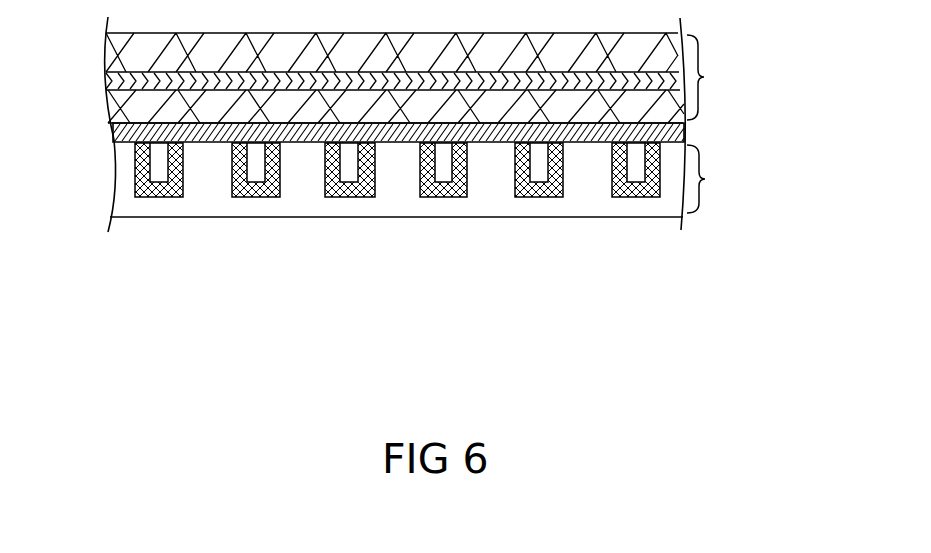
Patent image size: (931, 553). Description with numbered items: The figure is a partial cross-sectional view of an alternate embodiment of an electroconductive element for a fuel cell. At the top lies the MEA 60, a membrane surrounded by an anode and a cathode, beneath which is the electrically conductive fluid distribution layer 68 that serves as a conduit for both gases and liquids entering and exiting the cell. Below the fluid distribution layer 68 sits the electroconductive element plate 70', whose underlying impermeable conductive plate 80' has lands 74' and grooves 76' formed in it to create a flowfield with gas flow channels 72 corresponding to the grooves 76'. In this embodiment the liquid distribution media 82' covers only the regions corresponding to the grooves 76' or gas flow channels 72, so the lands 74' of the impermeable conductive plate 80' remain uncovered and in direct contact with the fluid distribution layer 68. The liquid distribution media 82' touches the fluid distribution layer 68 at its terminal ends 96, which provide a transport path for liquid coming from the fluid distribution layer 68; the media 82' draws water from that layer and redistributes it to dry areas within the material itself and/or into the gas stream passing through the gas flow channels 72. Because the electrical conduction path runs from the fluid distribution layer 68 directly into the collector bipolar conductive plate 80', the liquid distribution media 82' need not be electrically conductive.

The MEA 60 is at (712, 72).
The fluid distribution layer 68 is at (112, 133).
The electroconductive element plate 70' is at (482, 167).
The gas flow channels 72 is at (637, 177).
The lands 74' is at (347, 233).
The grooves 76' is at (491, 234).
The impermeable conductive plate 80' is at (396, 258).
The liquid distribution media 82' is at (136, 233).
The terminal ends 96 is at (228, 144).